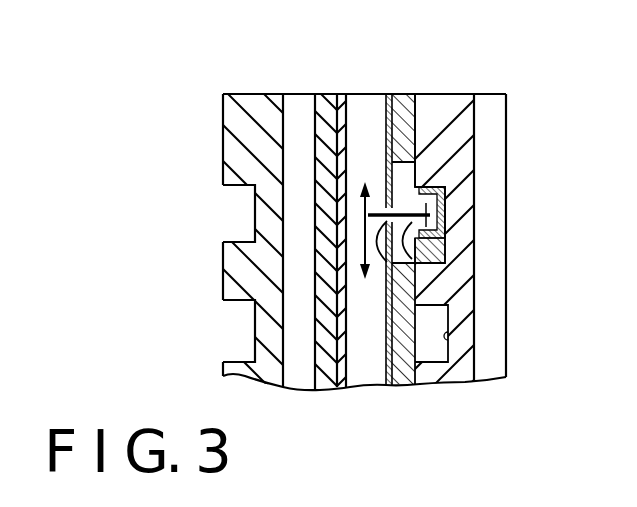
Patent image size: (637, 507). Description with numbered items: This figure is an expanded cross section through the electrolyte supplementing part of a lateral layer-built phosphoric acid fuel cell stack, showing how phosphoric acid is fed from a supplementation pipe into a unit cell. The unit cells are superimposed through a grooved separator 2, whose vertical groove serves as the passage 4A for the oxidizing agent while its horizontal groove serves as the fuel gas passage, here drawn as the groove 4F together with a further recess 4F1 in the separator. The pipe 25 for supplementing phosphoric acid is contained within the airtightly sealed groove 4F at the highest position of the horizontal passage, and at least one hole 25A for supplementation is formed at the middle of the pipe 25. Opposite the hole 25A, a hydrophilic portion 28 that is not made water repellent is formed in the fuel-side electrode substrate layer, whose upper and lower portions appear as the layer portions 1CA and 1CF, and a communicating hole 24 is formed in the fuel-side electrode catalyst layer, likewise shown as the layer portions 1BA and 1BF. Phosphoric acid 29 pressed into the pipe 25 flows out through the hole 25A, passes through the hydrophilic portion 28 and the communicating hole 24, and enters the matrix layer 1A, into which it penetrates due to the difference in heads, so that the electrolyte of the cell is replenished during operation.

The grooved separator 2 is at (242, 118).
The passage for an oxidizing agent 4A is at (298, 157).
The recess 4F1 is at (240, 212).
The groove (passage for the fuel gas) 4F is at (250, 337).
The upper layer portion 1CA is at (325, 93).
The upper layer portion 1BA is at (344, 93).
The matrix layer 1A is at (378, 93).
The hydrophilic portion 28 is at (405, 167).
The pipe for supplementing phosphoric acid 25 is at (442, 190).
The phosphoric acid 29 is at (425, 233).
The hole for supplementing phosphoric acid 25A is at (412, 252).
The communicating hole 24 is at (400, 266).
The lower layer portion 1BF is at (390, 387).
The lower layer portion 1CF is at (412, 387).